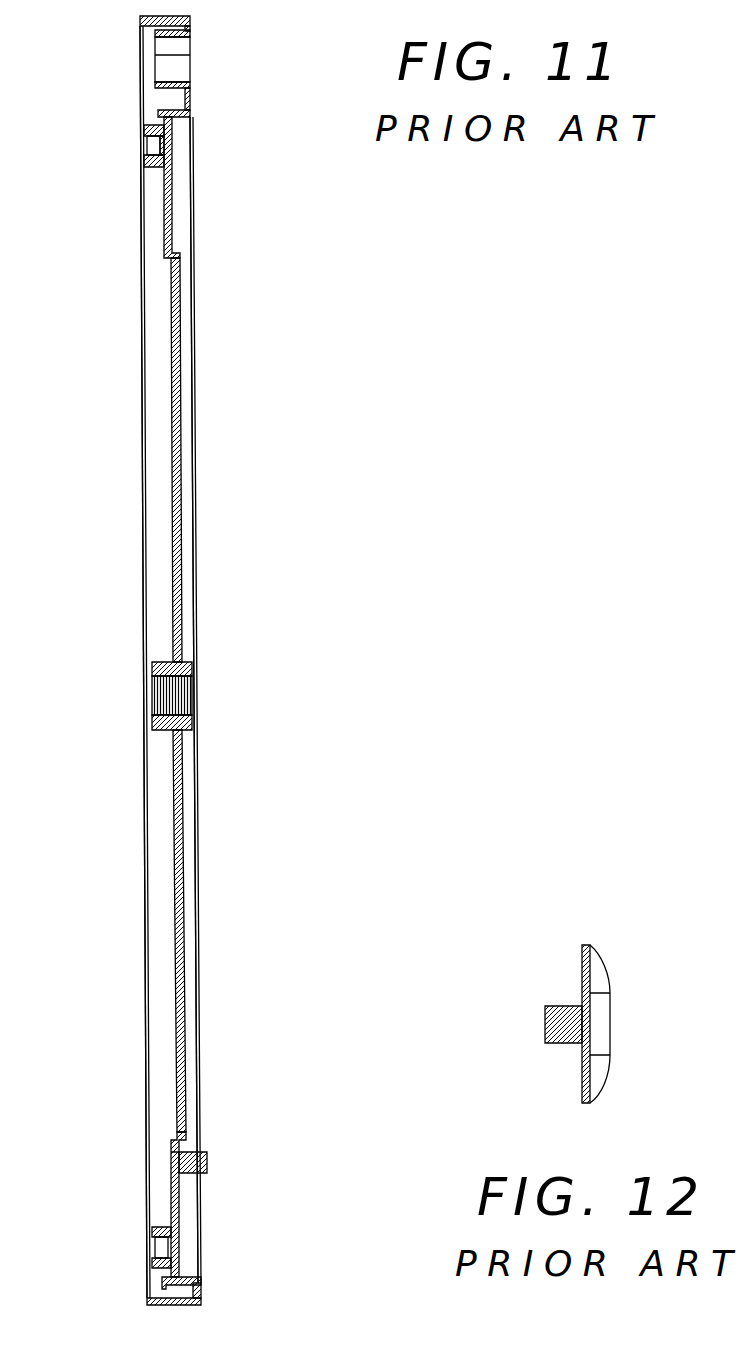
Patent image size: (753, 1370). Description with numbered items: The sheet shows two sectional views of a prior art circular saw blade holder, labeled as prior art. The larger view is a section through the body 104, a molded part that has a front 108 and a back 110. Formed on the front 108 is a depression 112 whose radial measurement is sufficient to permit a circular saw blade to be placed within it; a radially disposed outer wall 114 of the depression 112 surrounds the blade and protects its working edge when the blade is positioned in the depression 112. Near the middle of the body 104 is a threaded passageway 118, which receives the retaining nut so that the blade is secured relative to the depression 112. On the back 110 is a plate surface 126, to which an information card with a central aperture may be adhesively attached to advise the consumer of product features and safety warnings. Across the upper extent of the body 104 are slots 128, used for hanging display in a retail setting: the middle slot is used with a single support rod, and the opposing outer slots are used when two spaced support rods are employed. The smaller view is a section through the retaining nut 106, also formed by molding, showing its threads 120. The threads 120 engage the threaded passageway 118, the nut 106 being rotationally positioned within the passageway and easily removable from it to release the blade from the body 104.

In FIG. 11, the body 104 is at (313, 868).
In FIG. 12, the retaining nut 106 is at (582, 975).
In FIG. 11, the front 108 is at (182, 386).
In FIG. 11, the back 110 is at (171, 428).
In FIG. 11, the depression 112 is at (188, 492).
In FIG. 11, the radially disposed outer wall 114 is at (182, 120).
In FIG. 11, the threaded passageway 118 is at (188, 700).
In FIG. 12, the threads 120 is at (560, 1043).
In FIG. 11, the plate surface 126 is at (172, 572).
In FIG. 11, the slots 128 is at (175, 68).